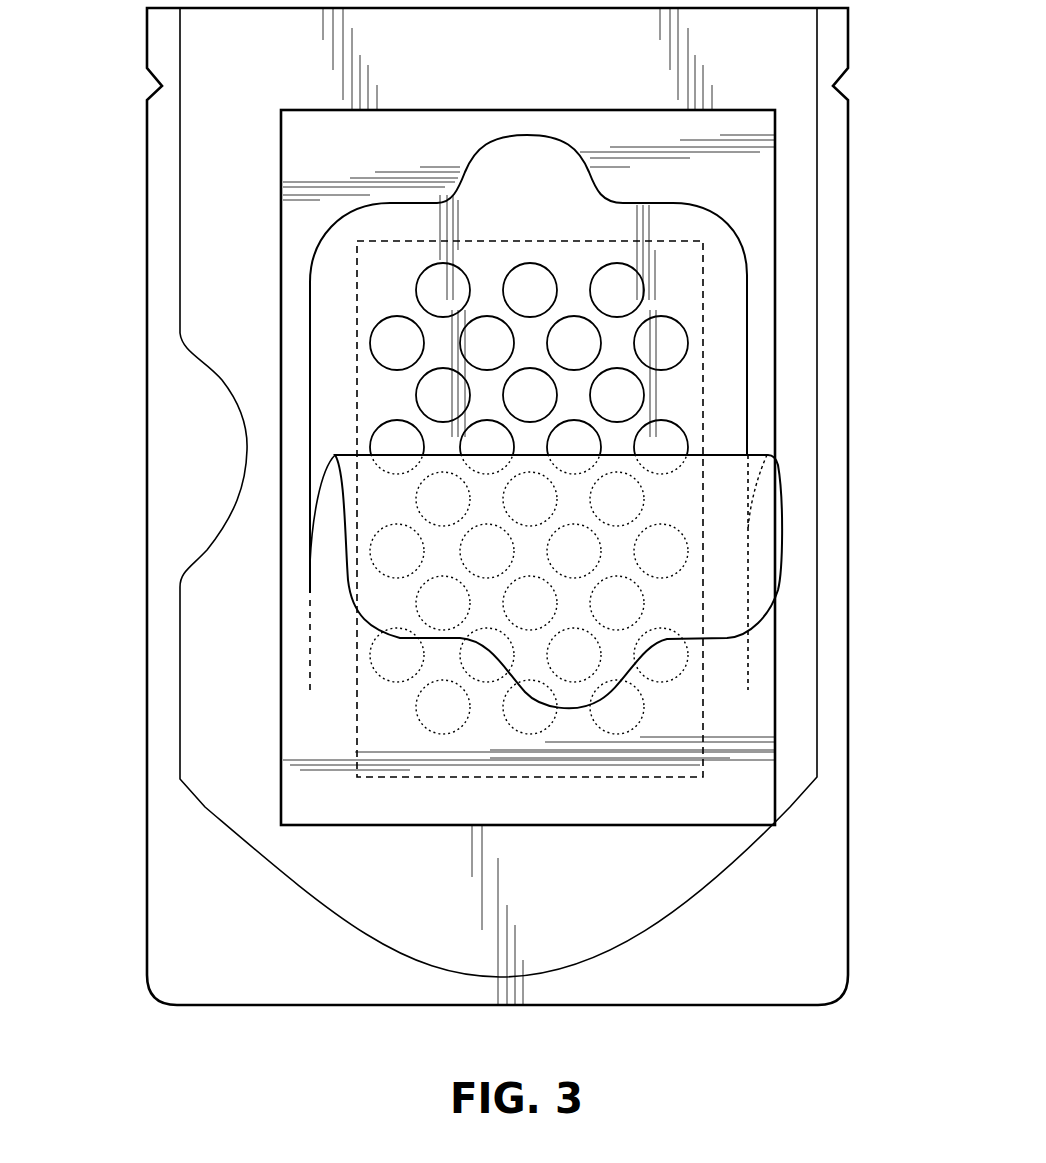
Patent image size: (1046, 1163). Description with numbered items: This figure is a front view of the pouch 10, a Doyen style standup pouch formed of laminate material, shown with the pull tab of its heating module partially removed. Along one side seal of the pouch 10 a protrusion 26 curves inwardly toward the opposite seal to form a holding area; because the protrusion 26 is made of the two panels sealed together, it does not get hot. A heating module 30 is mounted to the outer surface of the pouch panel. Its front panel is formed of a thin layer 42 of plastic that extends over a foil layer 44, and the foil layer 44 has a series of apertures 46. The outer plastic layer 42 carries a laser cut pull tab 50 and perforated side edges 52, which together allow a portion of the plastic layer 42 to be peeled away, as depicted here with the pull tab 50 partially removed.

The pouch 10 is at (868, 693).
The protrusion 26 is at (173, 483).
The heating module 30 is at (755, 173).
The thin layer of plastic 42 is at (743, 795).
The foil layer 44 is at (740, 291).
The apertures 46 is at (668, 353).
The pull tab 50 is at (575, 690).
The perforated side edges 52 is at (748, 652).